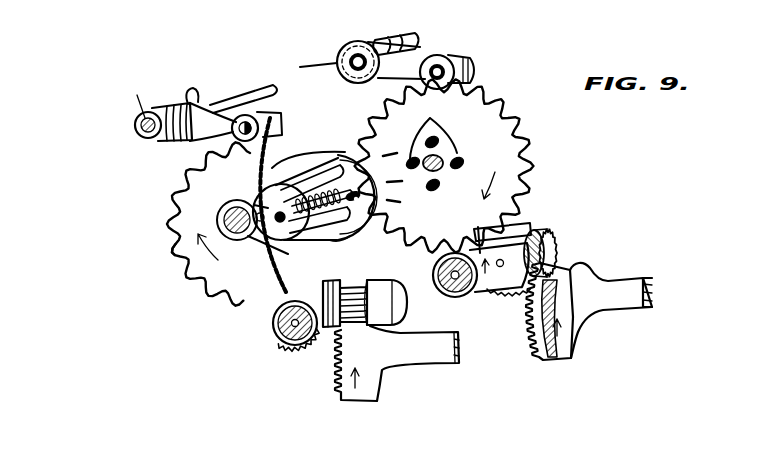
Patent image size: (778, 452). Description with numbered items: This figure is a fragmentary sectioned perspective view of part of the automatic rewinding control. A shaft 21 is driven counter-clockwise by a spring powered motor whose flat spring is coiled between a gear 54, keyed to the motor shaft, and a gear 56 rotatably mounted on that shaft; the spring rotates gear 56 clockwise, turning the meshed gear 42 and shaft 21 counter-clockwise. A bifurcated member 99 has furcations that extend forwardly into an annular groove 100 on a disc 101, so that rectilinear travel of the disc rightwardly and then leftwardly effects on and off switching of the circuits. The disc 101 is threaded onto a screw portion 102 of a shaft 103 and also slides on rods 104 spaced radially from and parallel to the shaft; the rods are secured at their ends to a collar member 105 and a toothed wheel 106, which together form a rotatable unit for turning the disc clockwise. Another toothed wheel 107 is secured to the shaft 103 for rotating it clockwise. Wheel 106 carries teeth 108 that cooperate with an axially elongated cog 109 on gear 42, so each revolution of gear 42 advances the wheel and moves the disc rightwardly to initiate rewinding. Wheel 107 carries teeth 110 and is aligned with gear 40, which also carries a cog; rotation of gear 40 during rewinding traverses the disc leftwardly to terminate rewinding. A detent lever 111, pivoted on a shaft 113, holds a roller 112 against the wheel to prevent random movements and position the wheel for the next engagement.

The shaft 21 is at (452, 303).
The gear 40 is at (311, 358).
The gear 42 is at (560, 249).
The gear 54 is at (397, 363).
The gear 56 is at (611, 310).
The bifurcated member 99 is at (321, 148).
The annular groove 100 is at (392, 198).
The disc 101 is at (345, 150).
The screw portion 102 is at (344, 240).
The shaft 103 is at (248, 205).
The rods 104 is at (293, 242).
The collar member 105 is at (266, 247).
The toothed wheel 106 is at (500, 150).
The toothed wheel 107 is at (173, 200).
The teeth 108 is at (530, 131).
The cog 109 is at (531, 225).
The teeth 110 is at (174, 264).
The detent lever 111 is at (193, 96).
The roller 112 is at (472, 57).
The shaft 113 is at (338, 63).